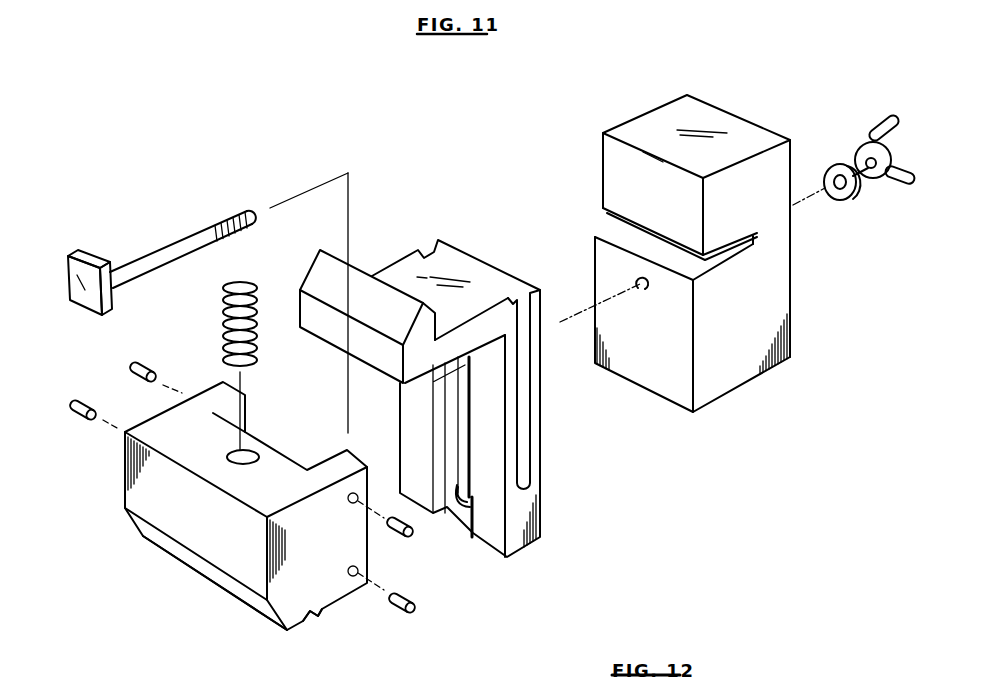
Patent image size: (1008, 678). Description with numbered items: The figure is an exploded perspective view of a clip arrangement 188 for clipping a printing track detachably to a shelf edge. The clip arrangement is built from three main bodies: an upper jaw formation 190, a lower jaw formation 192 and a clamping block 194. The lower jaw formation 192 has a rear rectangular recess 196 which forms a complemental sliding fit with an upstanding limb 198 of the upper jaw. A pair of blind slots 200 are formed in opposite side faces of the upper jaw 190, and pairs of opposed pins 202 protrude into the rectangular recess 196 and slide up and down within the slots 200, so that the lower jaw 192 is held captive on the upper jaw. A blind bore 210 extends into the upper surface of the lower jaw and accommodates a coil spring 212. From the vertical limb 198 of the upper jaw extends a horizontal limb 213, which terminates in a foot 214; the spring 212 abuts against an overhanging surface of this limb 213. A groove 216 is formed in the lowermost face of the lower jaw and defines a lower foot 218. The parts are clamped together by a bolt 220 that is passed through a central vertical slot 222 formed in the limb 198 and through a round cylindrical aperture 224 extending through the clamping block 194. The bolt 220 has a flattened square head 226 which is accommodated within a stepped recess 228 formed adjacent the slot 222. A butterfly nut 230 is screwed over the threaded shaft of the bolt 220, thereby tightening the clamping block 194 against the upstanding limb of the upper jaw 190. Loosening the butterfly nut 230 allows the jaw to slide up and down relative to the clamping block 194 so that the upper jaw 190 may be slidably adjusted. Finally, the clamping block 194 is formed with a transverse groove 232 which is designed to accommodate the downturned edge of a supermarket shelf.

The clip arrangement 188 is at (570, 524).
The upper jaw formation 190 is at (363, 384).
The lower jaw formation 192 is at (167, 581).
The clamping block 194 is at (731, 416).
The rear rectangular recess 196 is at (280, 424).
The upstanding limb 198 is at (402, 464).
The blind slots 200 is at (426, 251).
The opposed pins 202 is at (82, 384).
The blind bore 210 is at (238, 456).
The coil spring 212 is at (242, 281).
The horizontal limb 213 is at (477, 330).
The foot 214 is at (320, 260).
The groove 216 is at (307, 620).
The lower foot 218 is at (226, 612).
The bolt 220 is at (165, 242).
The central vertical slot 222 is at (462, 512).
The round cylindrical aperture 224 is at (645, 291).
The flattened square head 226 is at (65, 270).
The stepped recess 228 is at (440, 500).
The butterfly nut 230 is at (857, 142).
The transverse groove 232 is at (603, 220).